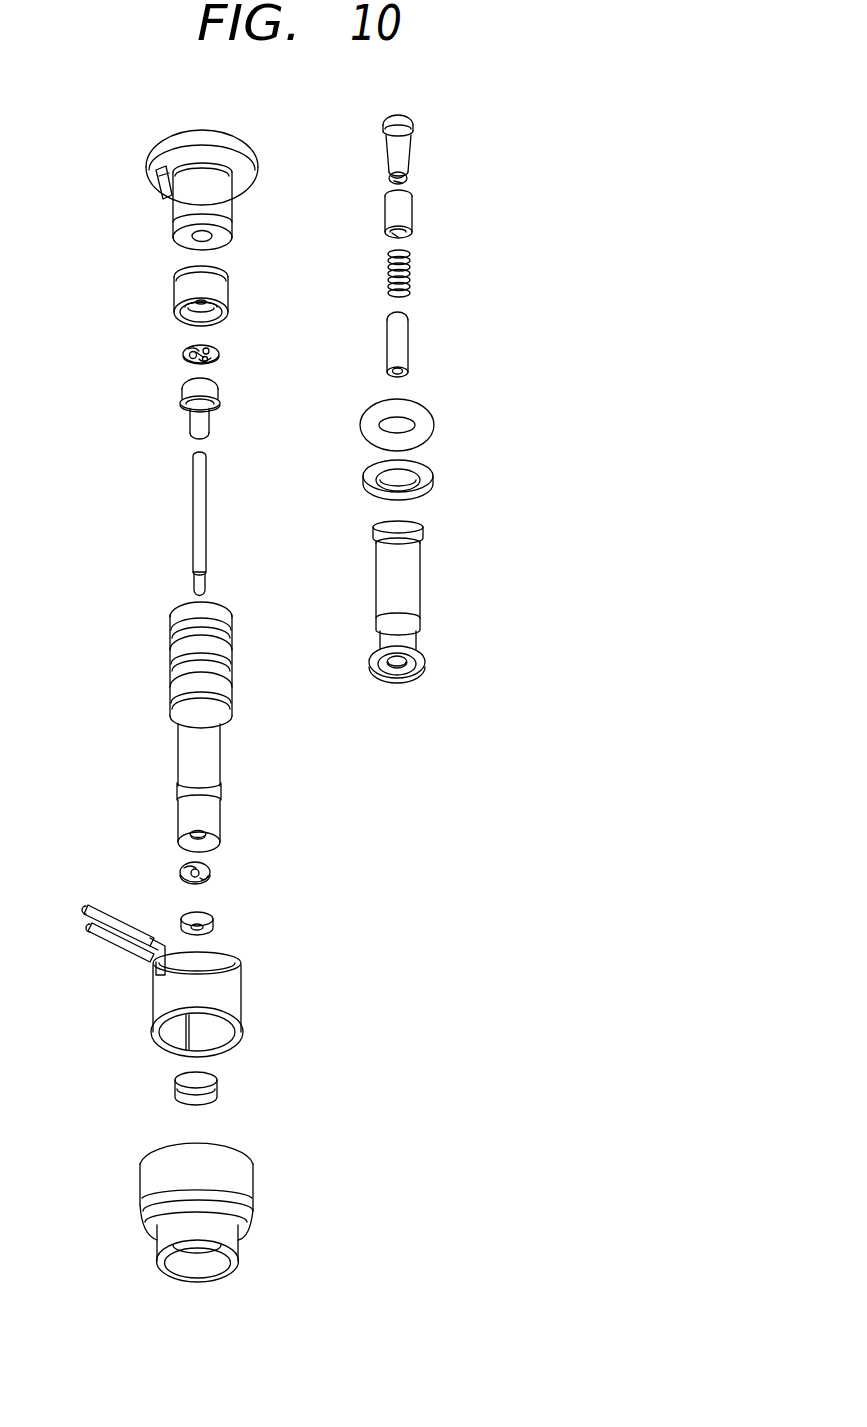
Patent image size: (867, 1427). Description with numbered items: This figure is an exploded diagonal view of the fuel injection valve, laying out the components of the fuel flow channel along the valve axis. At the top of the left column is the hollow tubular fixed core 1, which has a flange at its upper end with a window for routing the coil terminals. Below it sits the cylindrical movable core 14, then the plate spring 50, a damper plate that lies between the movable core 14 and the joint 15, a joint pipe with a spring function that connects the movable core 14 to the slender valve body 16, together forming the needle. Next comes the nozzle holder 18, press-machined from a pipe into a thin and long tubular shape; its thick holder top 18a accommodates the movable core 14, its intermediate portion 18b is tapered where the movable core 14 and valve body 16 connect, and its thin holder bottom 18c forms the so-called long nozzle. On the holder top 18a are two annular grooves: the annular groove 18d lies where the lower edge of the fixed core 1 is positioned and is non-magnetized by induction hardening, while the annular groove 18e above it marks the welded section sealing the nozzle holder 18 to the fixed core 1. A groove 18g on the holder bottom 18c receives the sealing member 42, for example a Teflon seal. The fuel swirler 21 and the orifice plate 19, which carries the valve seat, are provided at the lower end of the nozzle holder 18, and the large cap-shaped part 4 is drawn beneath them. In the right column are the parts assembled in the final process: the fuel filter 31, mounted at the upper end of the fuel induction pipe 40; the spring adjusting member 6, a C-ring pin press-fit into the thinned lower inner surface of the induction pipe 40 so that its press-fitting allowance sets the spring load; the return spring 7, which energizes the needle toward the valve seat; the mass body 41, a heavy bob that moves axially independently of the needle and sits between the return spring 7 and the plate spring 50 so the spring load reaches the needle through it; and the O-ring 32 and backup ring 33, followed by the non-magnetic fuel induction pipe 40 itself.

The fixed core 1 is at (218, 207).
The movable core 14 is at (222, 288).
The plate spring 50 is at (232, 358).
The joint 15 is at (218, 391).
The valve body 16 is at (208, 527).
The nozzle holder 18 is at (191, 727).
The holder top 18a is at (237, 692).
The intermediate portion 18b is at (183, 711).
The holder bottom 18c is at (192, 760).
The annular groove 18d is at (180, 669).
The annular groove 18e is at (185, 630).
The groove 18g is at (222, 800).
The fuel swirler 21 is at (224, 876).
The orifice plate 19 is at (222, 926).
The sealing member 42 is at (232, 1094).
The housing 4 is at (238, 1187).
The fuel filter 31 is at (402, 155).
The spring adjusting member 6 is at (407, 213).
The return spring 7 is at (409, 270).
The mass body 41 is at (402, 348).
The O-ring 32 is at (432, 428).
The backup ring 33 is at (433, 474).
The fuel induction pipe 40 is at (407, 582).